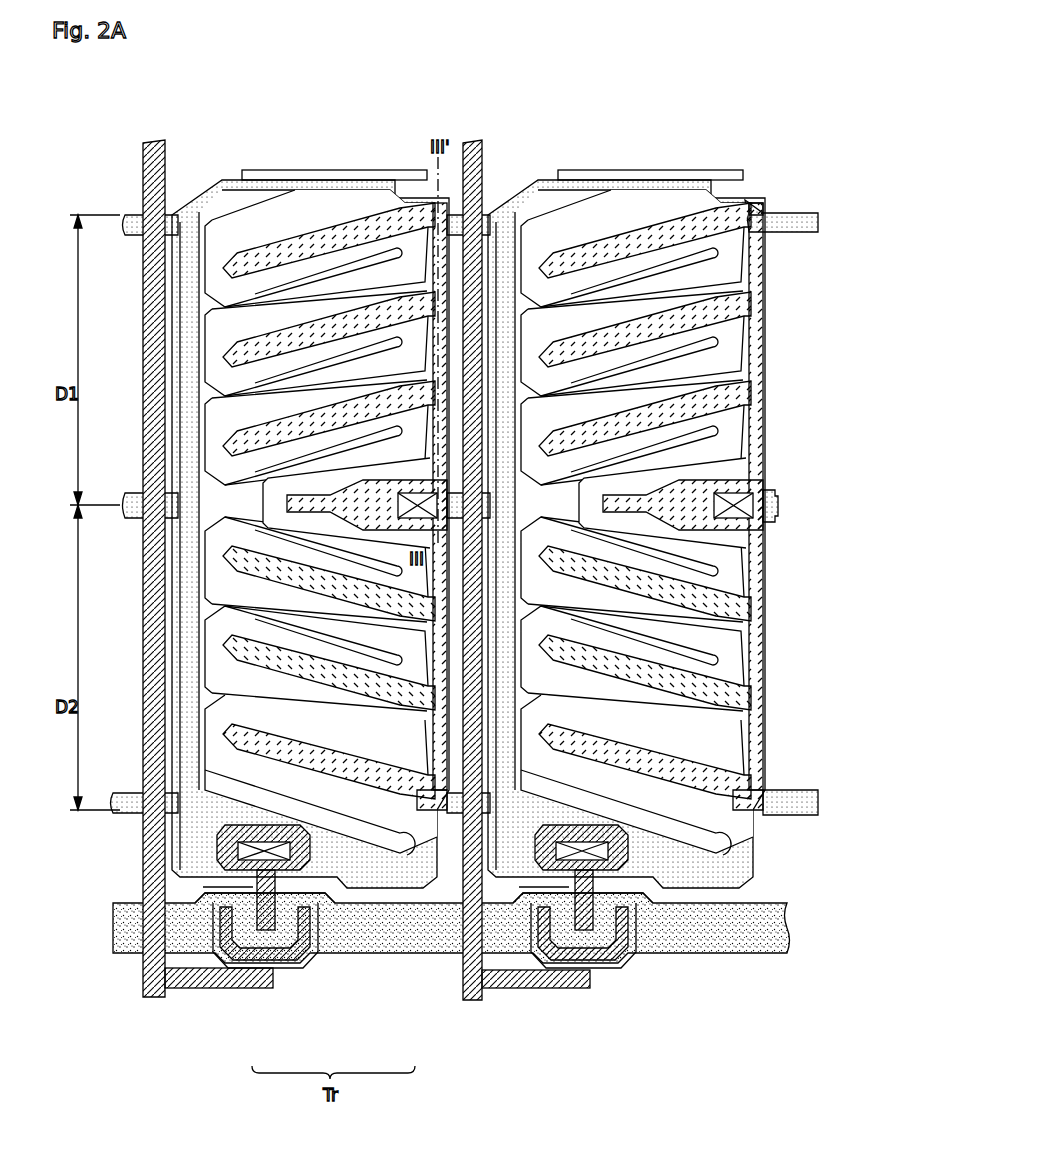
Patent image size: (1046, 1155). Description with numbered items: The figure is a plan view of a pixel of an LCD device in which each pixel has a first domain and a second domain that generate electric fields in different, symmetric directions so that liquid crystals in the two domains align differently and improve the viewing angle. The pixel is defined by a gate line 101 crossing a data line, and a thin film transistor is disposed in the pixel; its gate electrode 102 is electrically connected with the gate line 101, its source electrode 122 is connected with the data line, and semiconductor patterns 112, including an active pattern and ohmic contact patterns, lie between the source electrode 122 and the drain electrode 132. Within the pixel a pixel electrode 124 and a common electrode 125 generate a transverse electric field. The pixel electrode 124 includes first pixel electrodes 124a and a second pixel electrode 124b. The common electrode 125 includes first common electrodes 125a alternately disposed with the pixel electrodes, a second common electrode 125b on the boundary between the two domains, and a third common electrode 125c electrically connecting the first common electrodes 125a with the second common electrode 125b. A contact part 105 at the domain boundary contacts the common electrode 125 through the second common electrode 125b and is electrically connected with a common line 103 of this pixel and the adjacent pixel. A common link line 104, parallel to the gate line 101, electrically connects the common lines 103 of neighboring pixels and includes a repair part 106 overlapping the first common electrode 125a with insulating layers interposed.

The gate line 101 is at (716, 952).
The gate electrode 102 is at (150, 757).
The common line 103 is at (180, 654).
The common link line 104 is at (650, 180).
The contact part 105 is at (779, 503).
The repair part 106 is at (748, 210).
The semiconductor patterns 112 is at (308, 918).
The source electrode 122 is at (285, 960).
The pixel electrode 124 is at (296, 128).
The first pixel electrodes 124a is at (279, 300).
The second pixel electrode 124b is at (183, 318).
The common electrode 125 is at (840, 238).
The first common electrodes 125a is at (707, 293).
The second common electrode 125b is at (722, 472).
The third common electrode 125c is at (762, 357).
The drain electrode 132 is at (297, 925).